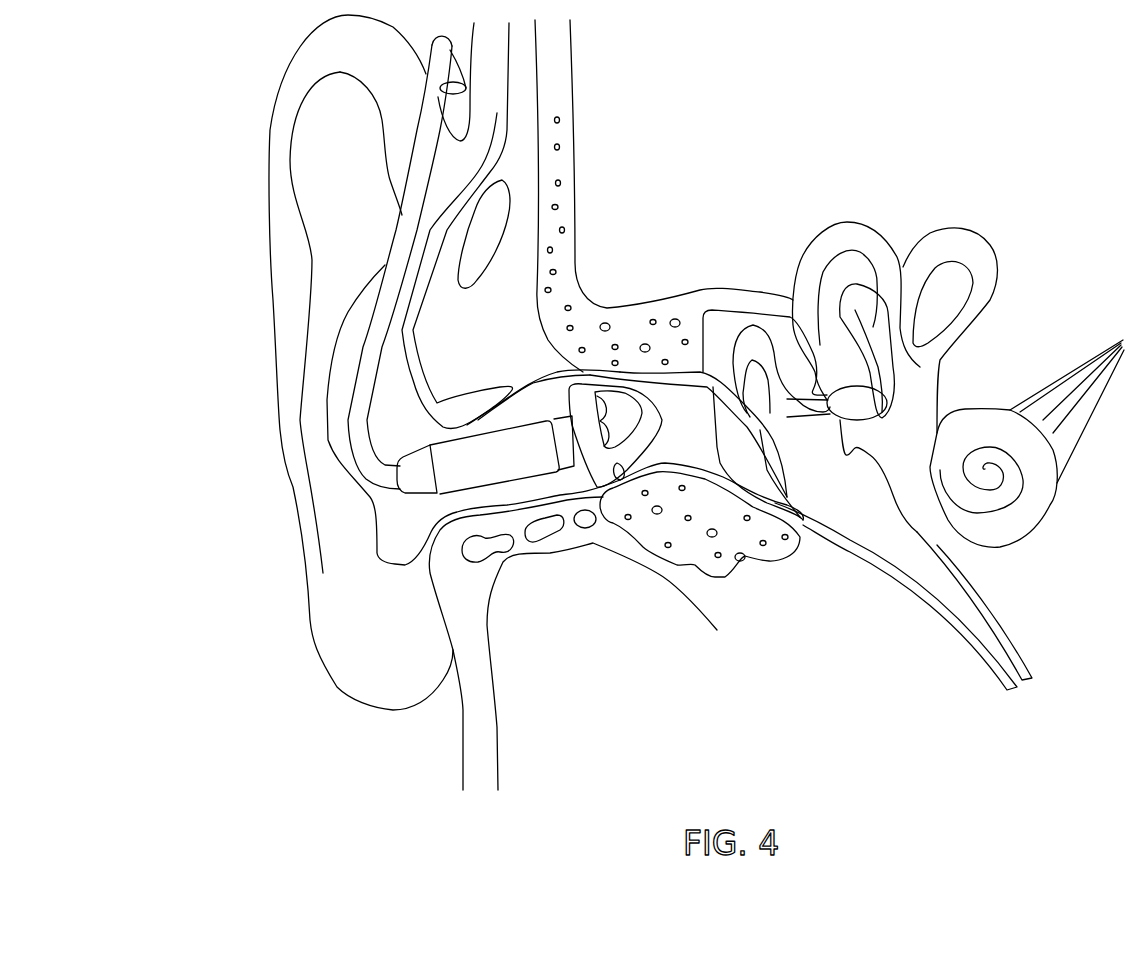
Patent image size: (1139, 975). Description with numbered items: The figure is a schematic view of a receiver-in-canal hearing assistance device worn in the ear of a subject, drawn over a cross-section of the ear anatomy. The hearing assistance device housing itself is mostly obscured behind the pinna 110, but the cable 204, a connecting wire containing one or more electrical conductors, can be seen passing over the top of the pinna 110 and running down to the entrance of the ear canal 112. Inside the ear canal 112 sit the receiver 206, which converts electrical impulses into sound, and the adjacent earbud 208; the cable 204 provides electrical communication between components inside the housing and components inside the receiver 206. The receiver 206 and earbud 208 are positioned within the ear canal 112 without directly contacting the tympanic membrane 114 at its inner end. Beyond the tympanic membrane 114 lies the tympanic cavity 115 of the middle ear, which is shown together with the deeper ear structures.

The pinna 110 is at (313, 402).
The ear canal 112 is at (511, 494).
The tympanic membrane 114 is at (727, 430).
The tympanic cavity 115 is at (820, 473).
The cable 204 is at (402, 243).
The receiver 206 is at (523, 453).
The earbud 208 is at (650, 421).